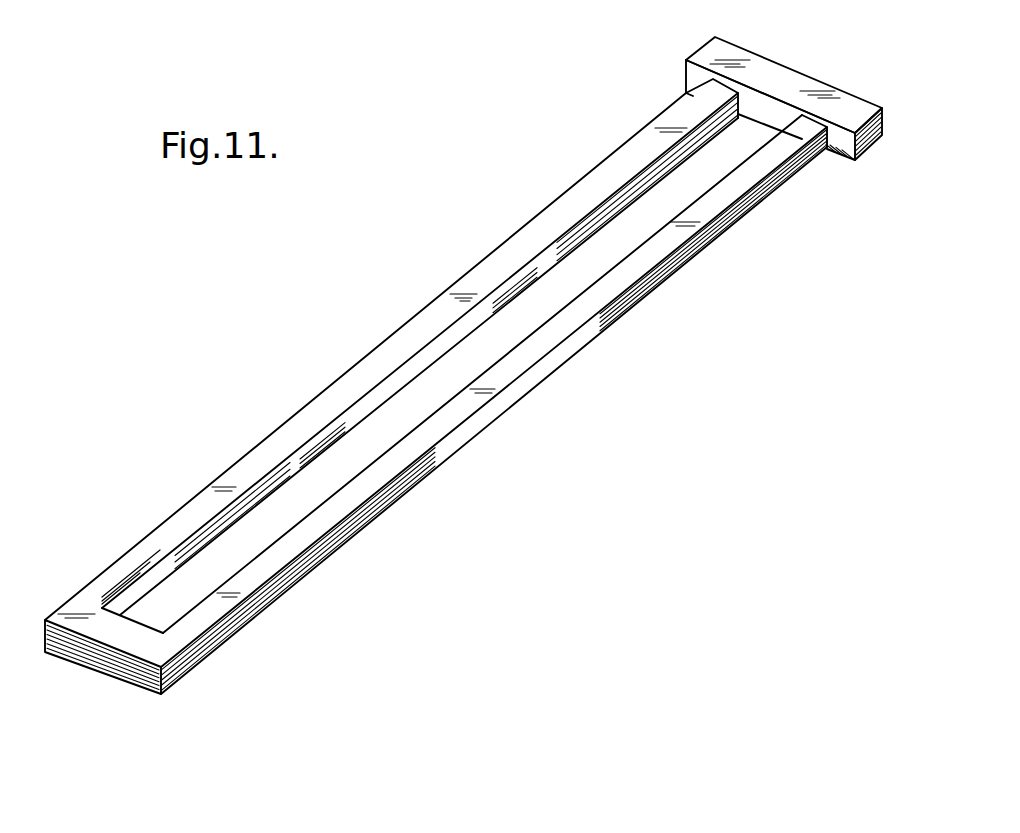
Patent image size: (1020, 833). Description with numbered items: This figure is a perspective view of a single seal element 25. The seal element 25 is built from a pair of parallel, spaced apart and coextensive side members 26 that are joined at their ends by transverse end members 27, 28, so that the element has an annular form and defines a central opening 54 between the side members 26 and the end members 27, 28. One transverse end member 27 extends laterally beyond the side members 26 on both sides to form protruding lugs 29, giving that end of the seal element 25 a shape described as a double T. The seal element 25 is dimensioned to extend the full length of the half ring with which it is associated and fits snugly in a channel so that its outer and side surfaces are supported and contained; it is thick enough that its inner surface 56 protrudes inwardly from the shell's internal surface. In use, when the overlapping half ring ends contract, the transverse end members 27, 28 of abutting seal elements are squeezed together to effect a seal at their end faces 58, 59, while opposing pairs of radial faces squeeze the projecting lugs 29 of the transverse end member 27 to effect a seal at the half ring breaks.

The seal element 25 is at (664, 388).
The side members 26 is at (568, 208).
The transverse end member 27 is at (786, 82).
The transverse end member 28 is at (94, 655).
The protruding lugs 29 is at (698, 80).
The central opening 54 is at (532, 306).
The inner surface 56 is at (242, 584).
The end face 58 is at (127, 668).
The end face 59 is at (752, 57).